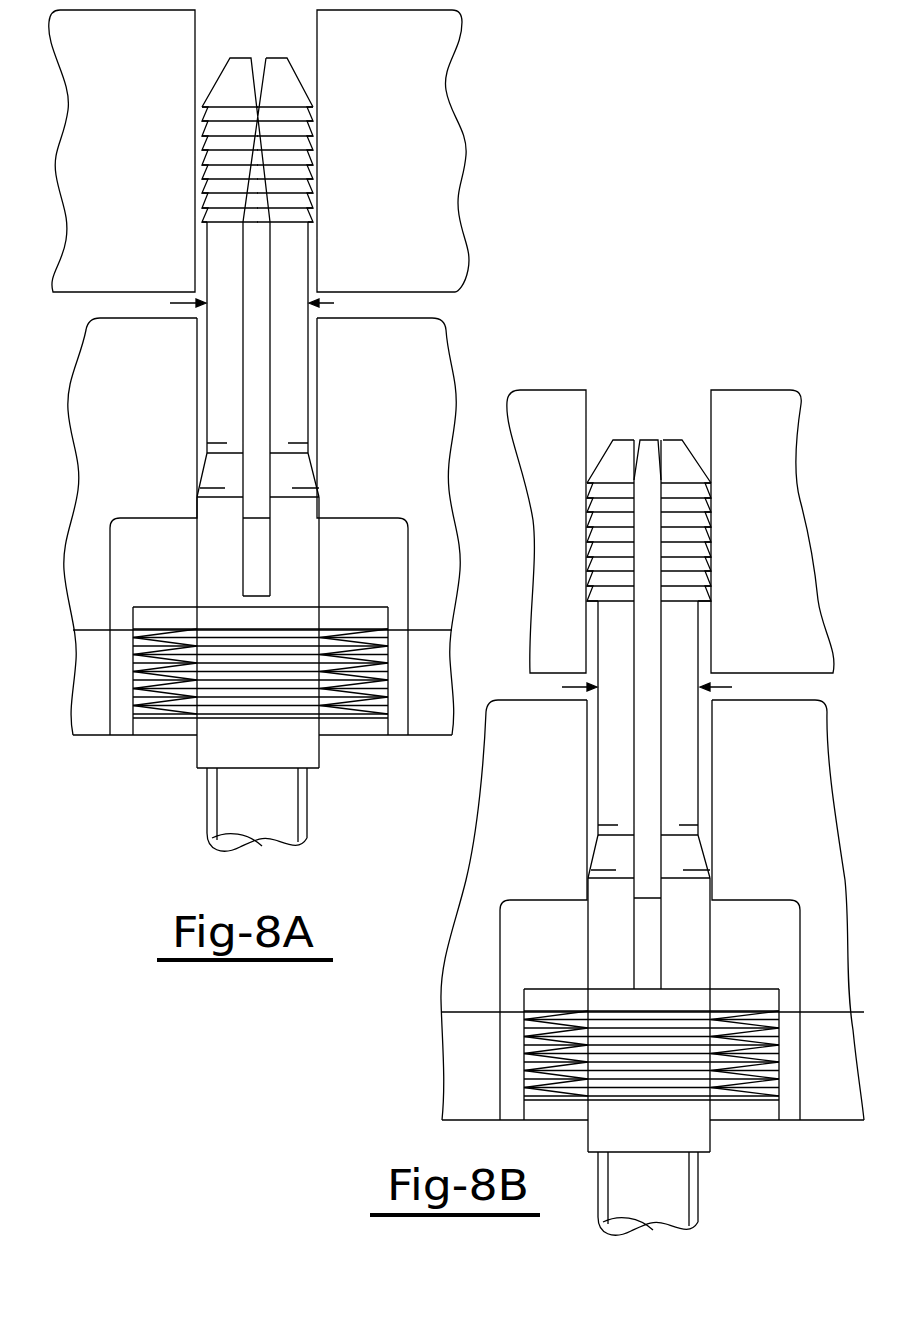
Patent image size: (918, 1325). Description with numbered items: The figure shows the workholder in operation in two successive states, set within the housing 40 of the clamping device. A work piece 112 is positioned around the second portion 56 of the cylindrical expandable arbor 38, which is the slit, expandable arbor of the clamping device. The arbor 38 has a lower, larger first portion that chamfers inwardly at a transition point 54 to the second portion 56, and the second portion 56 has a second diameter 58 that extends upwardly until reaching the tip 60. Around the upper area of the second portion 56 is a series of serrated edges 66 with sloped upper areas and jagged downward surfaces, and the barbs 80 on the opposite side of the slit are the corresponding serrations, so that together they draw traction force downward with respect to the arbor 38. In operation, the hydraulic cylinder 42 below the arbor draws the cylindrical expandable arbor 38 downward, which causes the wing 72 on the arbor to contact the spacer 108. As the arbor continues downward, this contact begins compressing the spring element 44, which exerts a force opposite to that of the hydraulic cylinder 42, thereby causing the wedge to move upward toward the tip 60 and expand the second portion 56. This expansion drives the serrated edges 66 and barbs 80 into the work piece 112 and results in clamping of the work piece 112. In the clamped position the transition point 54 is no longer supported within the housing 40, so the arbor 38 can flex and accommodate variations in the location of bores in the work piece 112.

In FIG. 8A, the work piece 112 is at (98, 120).
In FIG. 8B, the work piece 112 is at (777, 479).
In FIG. 8A, the tip 60 is at (245, 58).
In FIG. 8B, the tip 60 is at (649, 439).
In FIG. 8A, the barbs of first finger 80 is at (202, 179).
In FIG. 8B, the barbs of first finger 80 is at (588, 542).
In FIG. 8A, the serrated edges 66 is at (307, 170).
In FIG. 8B, the serrated edges 66 is at (714, 542).
In FIG. 8A, the second diameter 58 is at (270, 307).
In FIG. 8B, the second diameter 58 is at (665, 689).
In FIG. 8A, the connector housing 40 is at (141, 400).
In FIG. 8B, the connector housing 40 is at (783, 837).
In FIG. 8A, the second portion 56 is at (300, 347).
In FIG. 8B, the second portion 56 is at (685, 714).
In FIG. 8A, the cylindrical expandable arbor 38 is at (291, 424).
In FIG. 8A, the transition point 54 is at (197, 493).
In FIG. 8A, the wing 72 is at (258, 571).
In FIG. 8A, the spacer 108 is at (362, 619).
In FIG. 8A, the hydraulic cylinder 42 is at (280, 812).
In FIG. 8B, the spring element 44 is at (682, 1053).